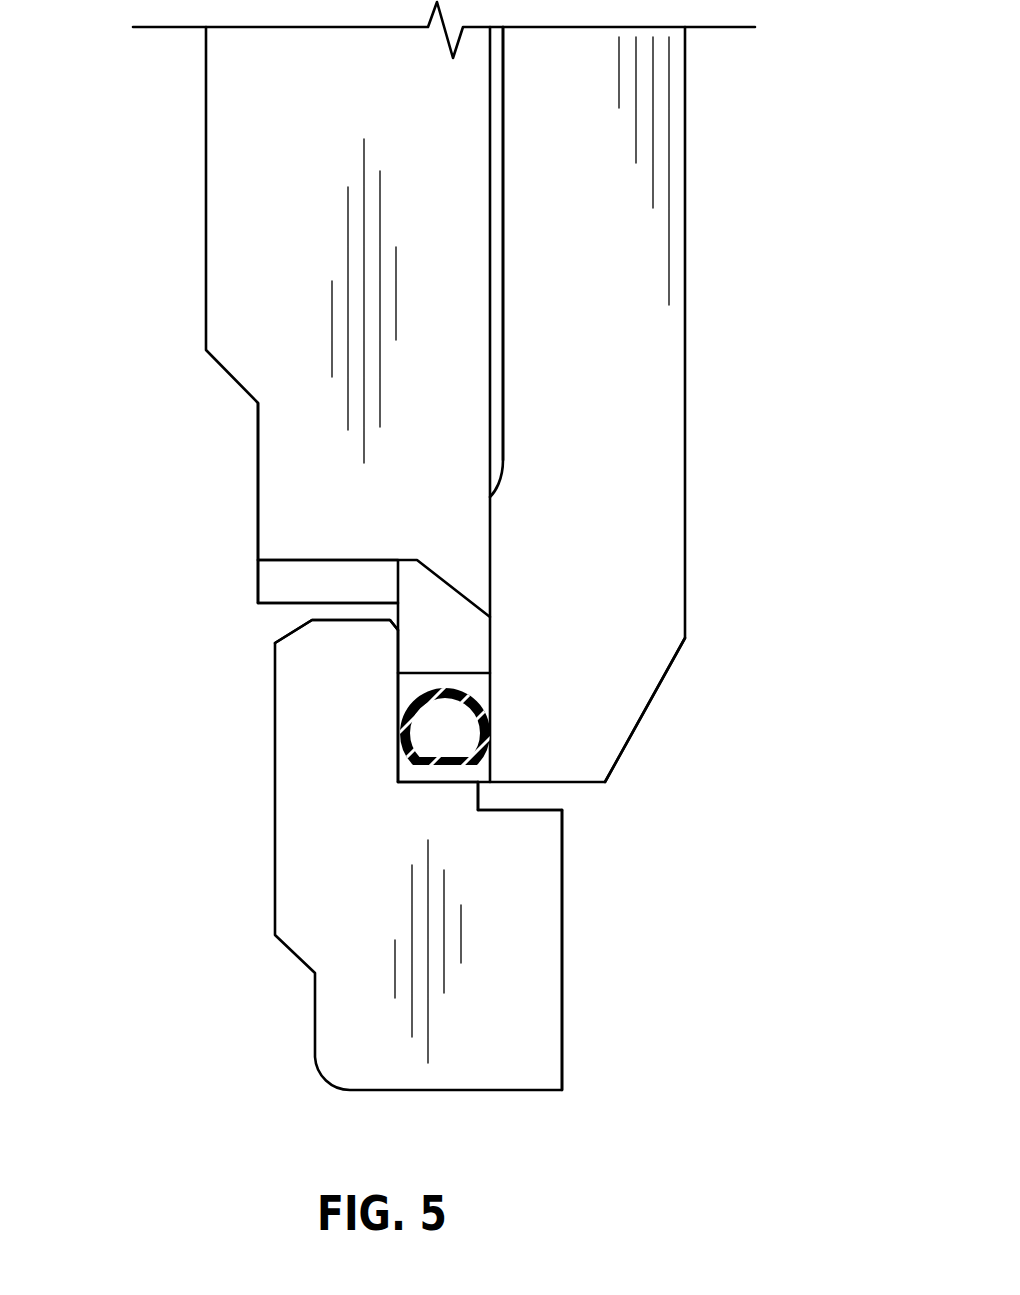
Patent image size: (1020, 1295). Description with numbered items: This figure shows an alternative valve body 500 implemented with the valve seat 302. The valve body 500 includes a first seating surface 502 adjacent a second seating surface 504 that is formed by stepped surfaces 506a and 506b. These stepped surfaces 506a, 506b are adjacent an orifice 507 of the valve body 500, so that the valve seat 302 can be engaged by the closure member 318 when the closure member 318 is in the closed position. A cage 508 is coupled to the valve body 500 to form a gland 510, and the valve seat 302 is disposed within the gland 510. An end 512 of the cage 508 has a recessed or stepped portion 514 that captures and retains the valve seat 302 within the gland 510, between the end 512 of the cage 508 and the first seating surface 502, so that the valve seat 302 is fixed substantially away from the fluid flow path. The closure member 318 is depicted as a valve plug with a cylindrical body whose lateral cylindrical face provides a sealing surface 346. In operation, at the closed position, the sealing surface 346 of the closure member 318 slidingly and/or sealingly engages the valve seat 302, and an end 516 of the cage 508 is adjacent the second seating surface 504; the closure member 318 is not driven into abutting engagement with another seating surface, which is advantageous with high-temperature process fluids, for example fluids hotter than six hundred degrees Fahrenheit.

The valve body 500 is at (525, 1025).
The first seating surface 502 is at (435, 782).
The second seating surface 504 is at (545, 810).
The stepped surface 506a is at (400, 737).
The stepped surface 506b is at (478, 797).
The orifice 507 is at (562, 950).
The cage 508 is at (240, 152).
The gland 510 is at (413, 685).
The end of the cage 512 is at (293, 477).
The recessed or stepped portion 514 is at (277, 580).
The end of the cage 516 is at (593, 750).
The valve seat 302 is at (442, 697).
The closure member 318 is at (663, 329).
The sealing surface 346 is at (490, 497).